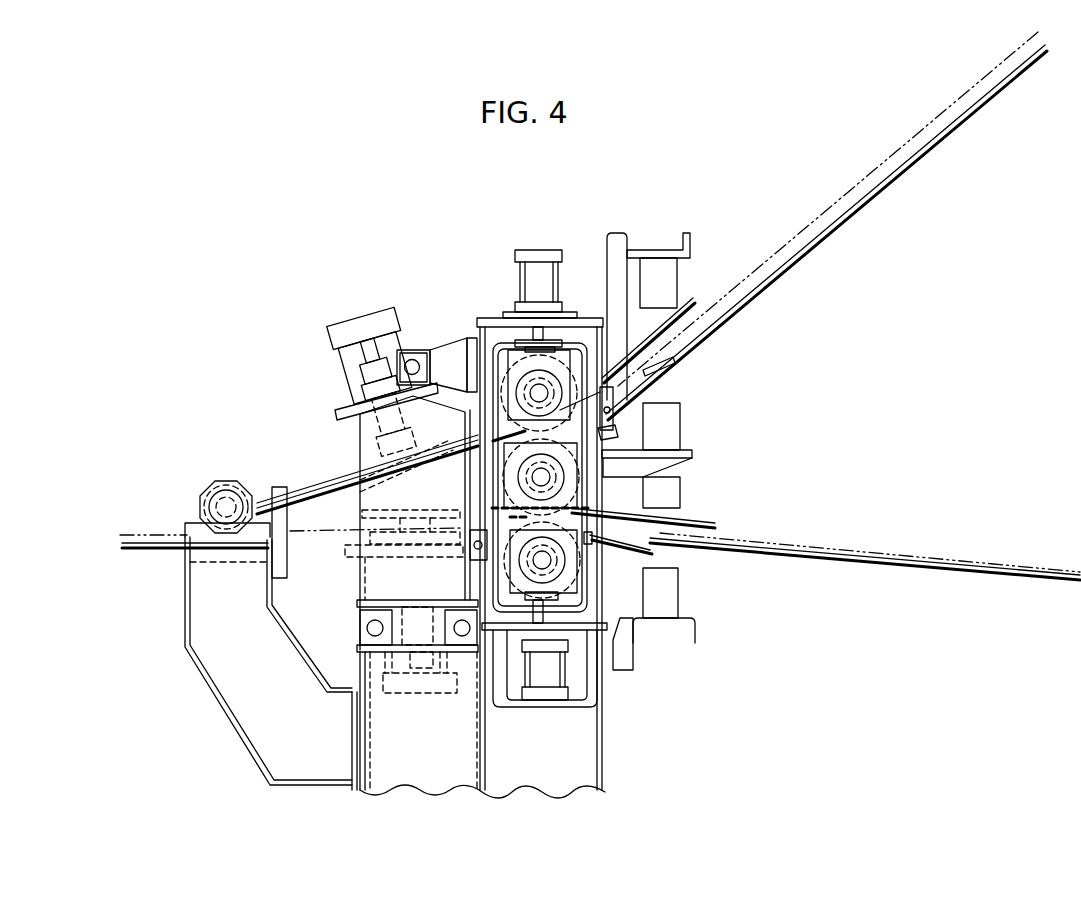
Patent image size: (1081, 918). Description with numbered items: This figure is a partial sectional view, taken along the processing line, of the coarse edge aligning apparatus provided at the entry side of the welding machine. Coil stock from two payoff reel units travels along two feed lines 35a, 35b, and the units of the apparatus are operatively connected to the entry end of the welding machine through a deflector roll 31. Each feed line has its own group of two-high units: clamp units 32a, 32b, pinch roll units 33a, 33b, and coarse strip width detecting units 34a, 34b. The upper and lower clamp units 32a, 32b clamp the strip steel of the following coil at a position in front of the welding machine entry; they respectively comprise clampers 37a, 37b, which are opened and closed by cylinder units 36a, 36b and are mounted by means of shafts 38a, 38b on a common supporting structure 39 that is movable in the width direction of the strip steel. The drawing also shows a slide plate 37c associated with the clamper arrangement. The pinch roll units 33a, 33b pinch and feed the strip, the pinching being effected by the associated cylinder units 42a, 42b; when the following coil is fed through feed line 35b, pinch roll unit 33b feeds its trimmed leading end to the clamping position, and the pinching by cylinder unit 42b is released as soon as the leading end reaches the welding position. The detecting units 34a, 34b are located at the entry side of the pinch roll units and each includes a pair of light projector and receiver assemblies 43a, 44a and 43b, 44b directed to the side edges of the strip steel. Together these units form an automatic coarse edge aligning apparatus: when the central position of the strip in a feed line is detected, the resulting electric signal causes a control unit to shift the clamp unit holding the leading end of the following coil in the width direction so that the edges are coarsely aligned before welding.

The deflector roll 31 is at (202, 495).
The upper clamp unit 32a is at (357, 448).
The lower clamp unit 32b is at (382, 573).
The upper pinch roll unit 33a is at (503, 418).
The lower pinch roll unit 33b is at (525, 517).
The upper coarse strip width detecting unit 34a is at (690, 302).
The lower coarse strip width detecting unit 34b is at (678, 587).
The upper feed line 35a is at (775, 252).
The lower feed line 35b is at (820, 548).
The upper cylinder unit 36a is at (353, 367).
The lower cylinder unit 36b is at (420, 685).
The upper clamper 37a is at (360, 472).
The lower clamper 37b is at (363, 560).
The slide plate 37c is at (367, 510).
The upper shaft 38a is at (414, 362).
The lower shaft 38b is at (375, 634).
The common supporting structure 39 is at (377, 600).
The upper cylinder unit 42a is at (532, 273).
The lower cylinder unit 42b is at (550, 675).
The light projector and receiver assembly 43a is at (677, 434).
The light projector and receiver assembly 43b is at (667, 493).
The light projector and receiver assembly 44a is at (667, 272).
The light projector and receiver assembly 44b is at (673, 607).